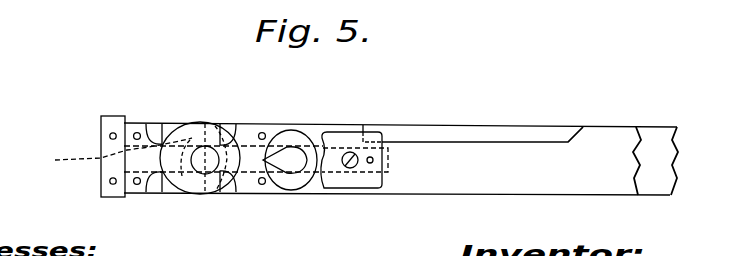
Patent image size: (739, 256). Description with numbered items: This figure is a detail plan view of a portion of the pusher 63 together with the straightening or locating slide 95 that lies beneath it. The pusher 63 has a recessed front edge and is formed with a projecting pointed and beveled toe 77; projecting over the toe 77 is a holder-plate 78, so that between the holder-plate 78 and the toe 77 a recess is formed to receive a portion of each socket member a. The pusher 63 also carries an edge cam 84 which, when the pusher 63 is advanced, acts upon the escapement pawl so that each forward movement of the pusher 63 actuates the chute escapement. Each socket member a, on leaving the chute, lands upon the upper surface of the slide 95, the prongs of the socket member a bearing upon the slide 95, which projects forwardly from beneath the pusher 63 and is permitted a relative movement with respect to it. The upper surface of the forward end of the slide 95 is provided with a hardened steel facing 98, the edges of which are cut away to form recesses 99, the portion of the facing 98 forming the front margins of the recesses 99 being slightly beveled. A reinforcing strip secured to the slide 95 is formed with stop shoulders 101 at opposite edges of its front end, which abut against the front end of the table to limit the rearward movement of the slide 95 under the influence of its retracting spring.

The pusher 63 is at (448, 186).
The stop shoulders 101 is at (106, 116).
The socket member a is at (237, 84).
The hardened steel facing 98 is at (137, 196).
The recesses 99 is at (160, 123).
The toe 77 is at (292, 162).
The holder-plate 78 is at (348, 133).
The slide 95 is at (470, 131).
The edge cam 84 is at (574, 128).